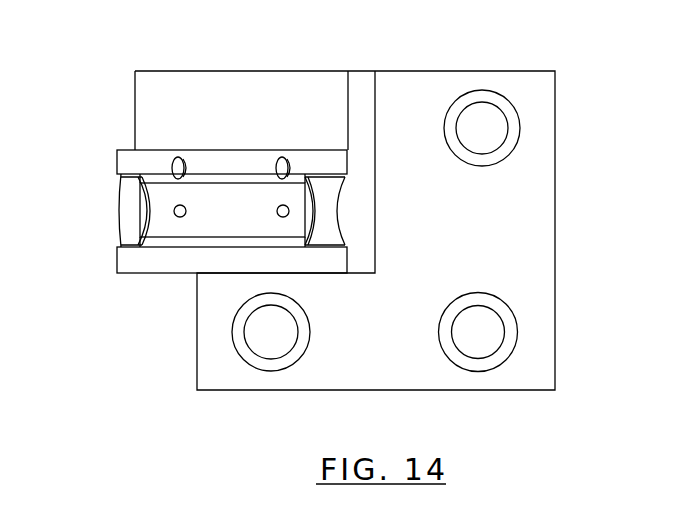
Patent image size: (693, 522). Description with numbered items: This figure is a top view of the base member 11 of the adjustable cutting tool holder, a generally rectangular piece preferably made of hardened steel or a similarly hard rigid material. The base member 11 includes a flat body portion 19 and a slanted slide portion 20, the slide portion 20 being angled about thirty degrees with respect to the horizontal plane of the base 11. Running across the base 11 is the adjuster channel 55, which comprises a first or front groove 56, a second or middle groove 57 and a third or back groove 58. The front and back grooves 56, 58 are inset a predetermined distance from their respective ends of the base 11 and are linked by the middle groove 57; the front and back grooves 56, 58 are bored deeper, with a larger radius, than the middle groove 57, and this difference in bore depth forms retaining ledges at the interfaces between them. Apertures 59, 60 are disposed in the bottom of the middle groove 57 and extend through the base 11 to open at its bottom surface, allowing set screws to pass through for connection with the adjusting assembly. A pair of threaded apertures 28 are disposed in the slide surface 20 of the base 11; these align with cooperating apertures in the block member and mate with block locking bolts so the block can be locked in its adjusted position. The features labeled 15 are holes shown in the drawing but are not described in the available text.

The base member 11 is at (604, 97).
The mounting holes 15 is at (518, 337).
The flat body portion 19 is at (555, 185).
The slanted slide portion 20 is at (107, 124).
The threaded apertures 28 is at (184, 162).
The adjuster channel 55 is at (95, 206).
The front groove 56 is at (120, 240).
The middle groove 57 is at (190, 237).
The back groove 58 is at (337, 213).
The aperture 59 is at (177, 218).
The aperture 60 is at (283, 218).